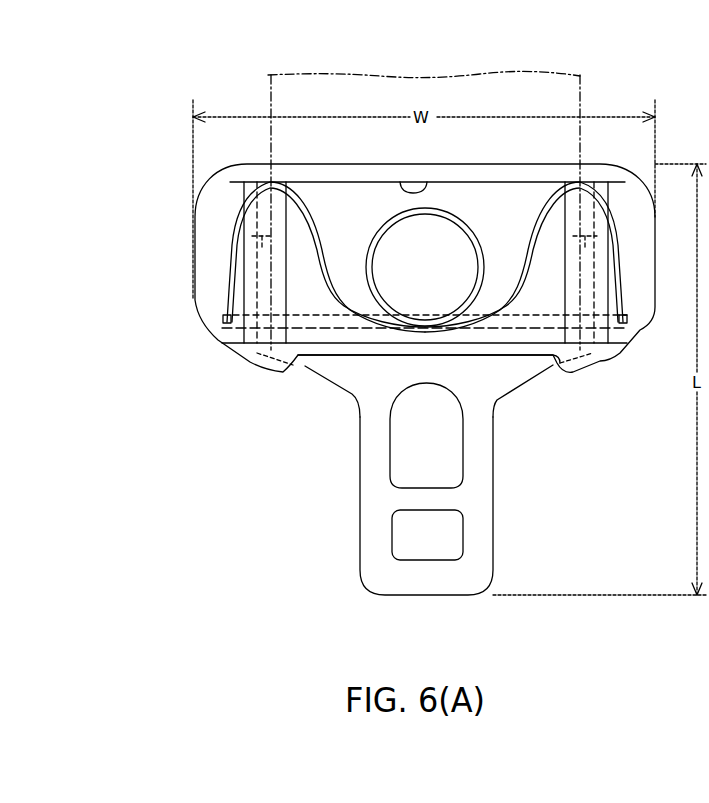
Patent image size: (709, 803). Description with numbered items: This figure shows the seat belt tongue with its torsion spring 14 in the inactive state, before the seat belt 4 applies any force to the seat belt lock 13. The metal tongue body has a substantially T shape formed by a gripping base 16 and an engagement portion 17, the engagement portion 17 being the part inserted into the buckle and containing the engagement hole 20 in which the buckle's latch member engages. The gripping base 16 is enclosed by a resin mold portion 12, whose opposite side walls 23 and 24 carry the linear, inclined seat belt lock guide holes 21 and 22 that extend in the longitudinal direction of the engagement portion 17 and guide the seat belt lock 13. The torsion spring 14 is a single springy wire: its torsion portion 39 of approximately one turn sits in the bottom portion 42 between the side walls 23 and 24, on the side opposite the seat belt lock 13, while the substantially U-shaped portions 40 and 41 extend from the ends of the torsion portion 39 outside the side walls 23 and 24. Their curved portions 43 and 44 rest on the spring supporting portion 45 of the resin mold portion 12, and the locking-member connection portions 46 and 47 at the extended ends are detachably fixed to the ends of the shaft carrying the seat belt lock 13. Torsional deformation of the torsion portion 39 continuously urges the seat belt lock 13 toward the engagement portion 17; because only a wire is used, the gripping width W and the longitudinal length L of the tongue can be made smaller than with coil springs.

The seat belt 4 is at (582, 95).
The resin mold portion 12 is at (203, 275).
The seat belt lock 13 is at (515, 340).
The torsion spring 14 is at (365, 253).
The gripping base 16 is at (318, 365).
The engagement portion 17 is at (483, 473).
The engagement hole 20 is at (440, 549).
The seat belt lock guide hole 21 is at (612, 237).
The seat belt lock guide hole 22 is at (232, 246).
The side wall 23 is at (563, 265).
The side wall 24 is at (283, 260).
The torsion portion 39 is at (455, 218).
The substantially U-shaped portion 40 is at (547, 188).
The substantially U-shaped portion 41 is at (315, 197).
The bottom portion 42 is at (372, 197).
The curved portion 43 is at (580, 183).
The curved portion 44 is at (295, 190).
The spring supporting portion 45 is at (426, 186).
The locking-member connection portion 46 is at (626, 340).
The locking-member connection portion 47 is at (222, 323).